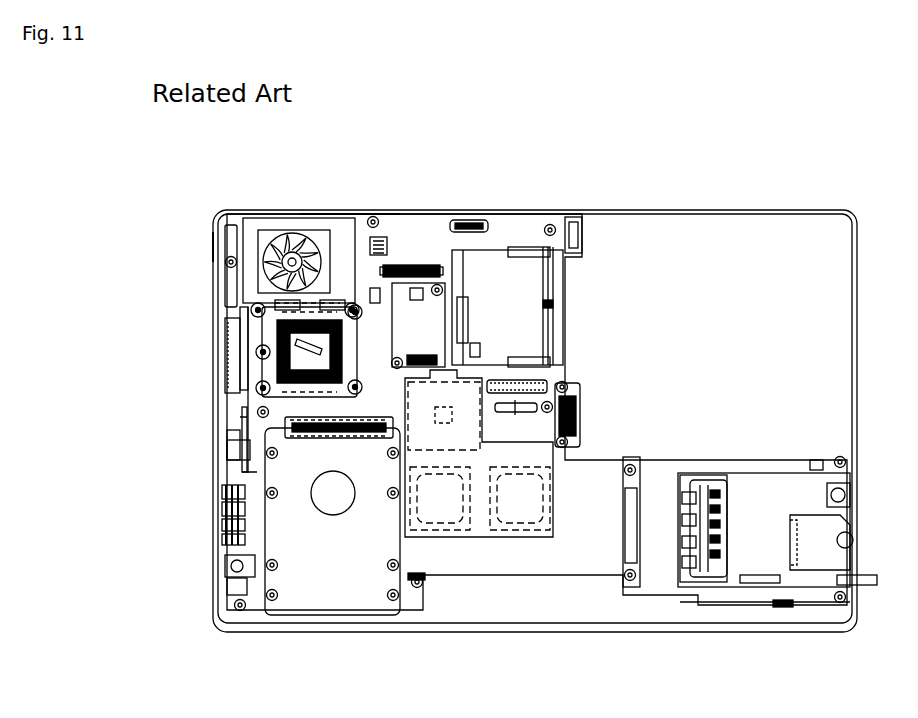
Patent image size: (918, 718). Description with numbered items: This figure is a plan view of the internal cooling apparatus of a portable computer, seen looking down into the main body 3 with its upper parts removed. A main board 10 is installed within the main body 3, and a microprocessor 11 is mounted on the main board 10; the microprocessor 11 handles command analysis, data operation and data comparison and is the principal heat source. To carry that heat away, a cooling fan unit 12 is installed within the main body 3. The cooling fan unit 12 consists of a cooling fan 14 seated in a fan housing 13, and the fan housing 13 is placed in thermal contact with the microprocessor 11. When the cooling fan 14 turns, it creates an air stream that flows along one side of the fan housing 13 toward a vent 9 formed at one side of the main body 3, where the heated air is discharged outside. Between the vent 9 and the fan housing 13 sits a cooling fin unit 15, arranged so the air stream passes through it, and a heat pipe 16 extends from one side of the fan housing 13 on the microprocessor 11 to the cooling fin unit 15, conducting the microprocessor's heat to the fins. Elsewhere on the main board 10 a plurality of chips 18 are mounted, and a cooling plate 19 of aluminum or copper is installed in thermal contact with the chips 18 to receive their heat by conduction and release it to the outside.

The main body 3 is at (636, 212).
The vent 9 is at (215, 247).
The main board 10 is at (432, 225).
The microprocessor 11 is at (273, 368).
The cooling fan unit 12 is at (345, 200).
The fan housing 13 is at (265, 222).
The cooling fan 14 is at (304, 230).
The cooling fin unit 15 is at (228, 222).
The heat pipe 16 is at (273, 328).
The chips 18 is at (448, 513).
The cooling plate 19 is at (548, 532).